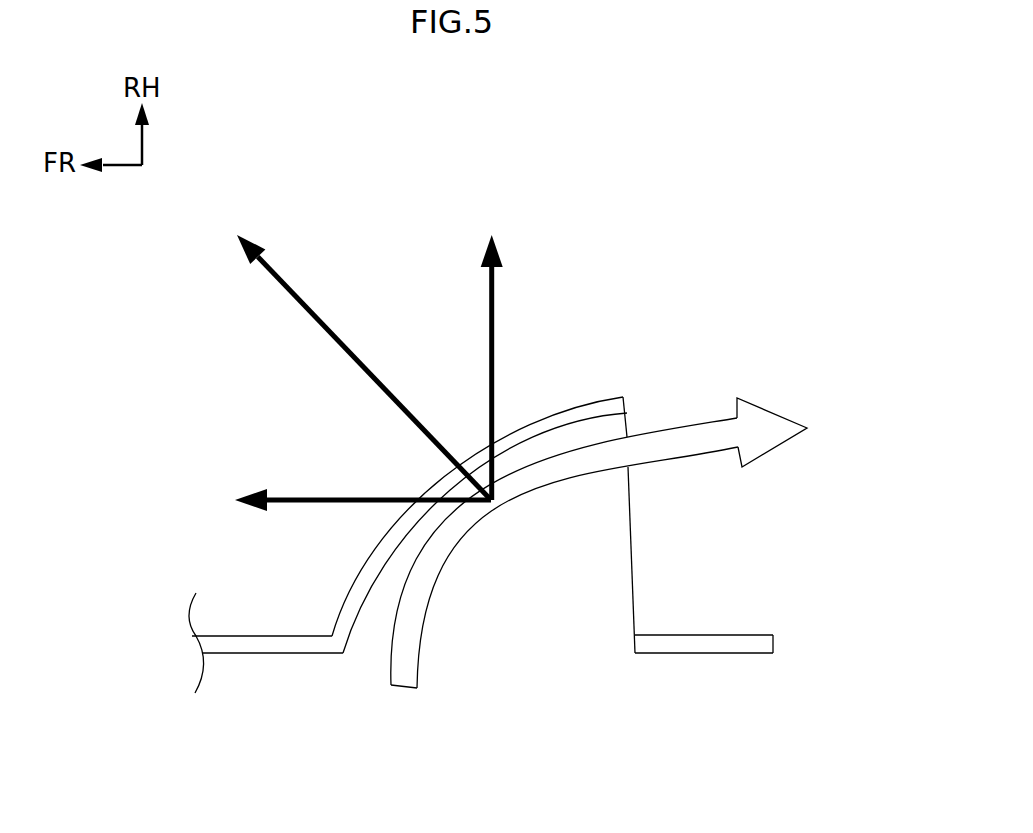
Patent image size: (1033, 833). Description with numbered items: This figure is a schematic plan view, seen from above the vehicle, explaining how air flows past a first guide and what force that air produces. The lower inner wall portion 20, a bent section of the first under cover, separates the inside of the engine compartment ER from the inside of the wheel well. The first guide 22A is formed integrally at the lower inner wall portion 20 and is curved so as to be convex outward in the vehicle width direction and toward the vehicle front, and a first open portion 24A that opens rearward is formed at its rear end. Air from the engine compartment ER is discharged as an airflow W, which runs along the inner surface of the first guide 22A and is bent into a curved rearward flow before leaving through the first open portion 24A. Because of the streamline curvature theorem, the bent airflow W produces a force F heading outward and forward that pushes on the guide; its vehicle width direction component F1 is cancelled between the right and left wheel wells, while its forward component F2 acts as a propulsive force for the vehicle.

The lower inner wall portion 20 is at (255, 635).
The first guide 22A is at (605, 396).
The first open portion 24A is at (614, 533).
The airflow W is at (697, 421).
The force F is at (329, 326).
The vehicle width direction component F1 is at (495, 331).
The vehicle forward and rearward direction component F2 is at (325, 497).
The engine compartment ER is at (472, 773).